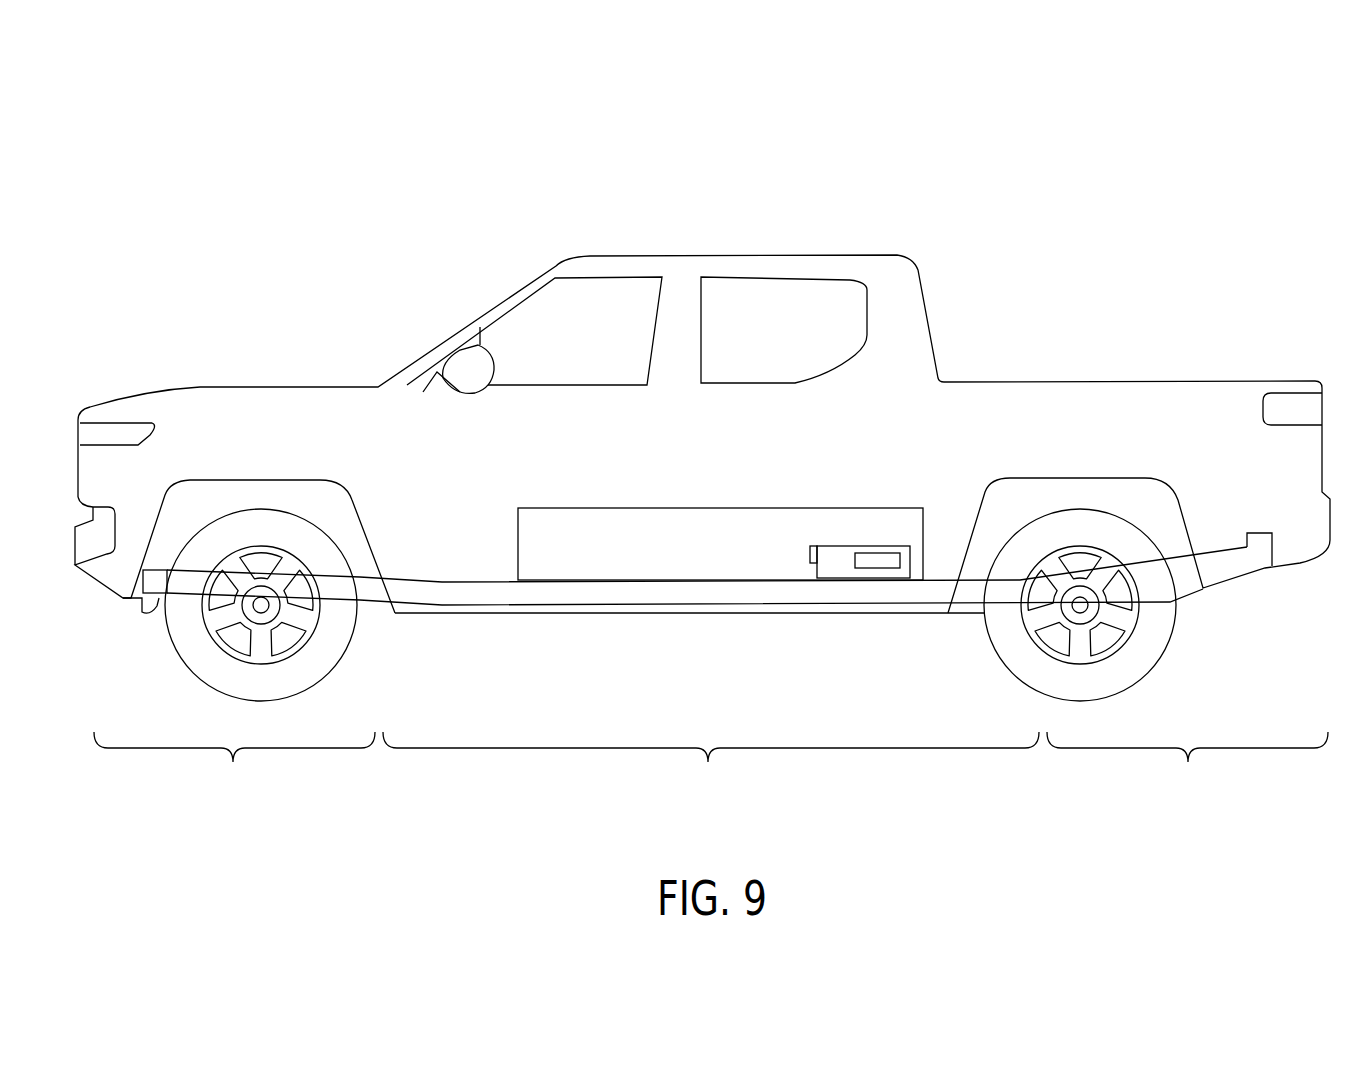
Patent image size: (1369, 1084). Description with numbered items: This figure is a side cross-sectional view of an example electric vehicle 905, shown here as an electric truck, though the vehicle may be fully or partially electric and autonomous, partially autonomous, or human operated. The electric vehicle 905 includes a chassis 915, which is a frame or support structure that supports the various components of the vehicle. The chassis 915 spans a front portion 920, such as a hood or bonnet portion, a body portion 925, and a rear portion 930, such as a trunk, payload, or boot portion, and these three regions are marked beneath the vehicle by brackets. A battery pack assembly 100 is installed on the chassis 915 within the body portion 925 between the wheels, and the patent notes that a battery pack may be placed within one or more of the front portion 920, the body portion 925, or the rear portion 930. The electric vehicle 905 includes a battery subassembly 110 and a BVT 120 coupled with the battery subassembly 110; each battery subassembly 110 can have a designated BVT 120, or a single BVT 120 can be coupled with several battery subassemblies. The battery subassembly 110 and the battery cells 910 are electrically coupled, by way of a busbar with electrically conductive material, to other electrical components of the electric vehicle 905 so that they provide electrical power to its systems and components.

The electric vehicle 905 is at (293, 160).
The chassis 915 is at (151, 555).
The battery pack assembly 100 is at (830, 500).
The battery cells 910 is at (878, 568).
The BVT 120 is at (812, 566).
The battery subassembly 110 is at (902, 578).
The front portion 920 is at (234, 765).
The body portion 925 is at (711, 765).
The rear portion 930 is at (1187, 765).